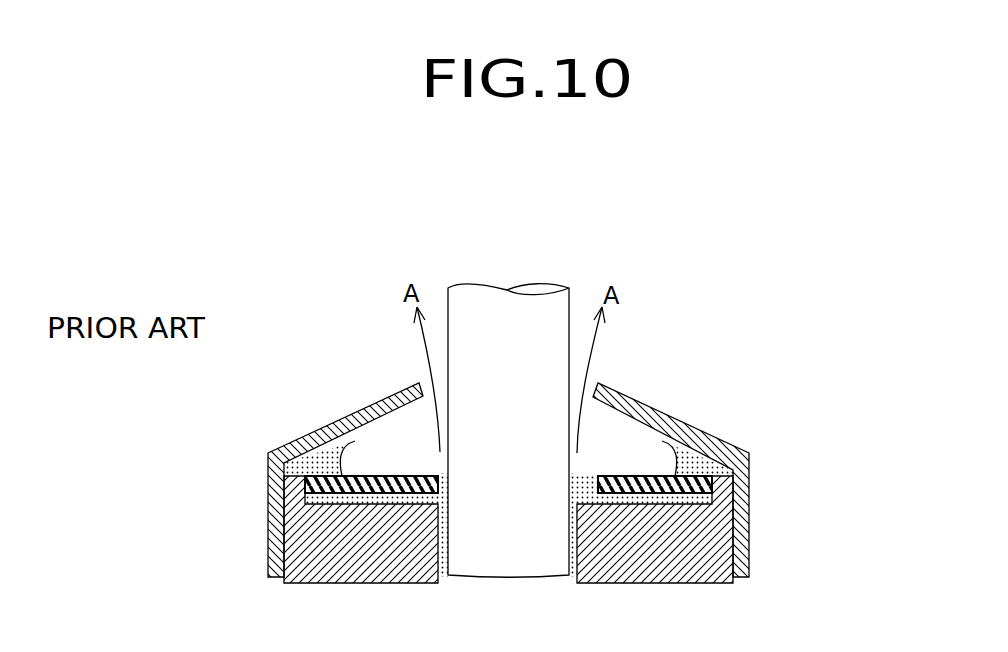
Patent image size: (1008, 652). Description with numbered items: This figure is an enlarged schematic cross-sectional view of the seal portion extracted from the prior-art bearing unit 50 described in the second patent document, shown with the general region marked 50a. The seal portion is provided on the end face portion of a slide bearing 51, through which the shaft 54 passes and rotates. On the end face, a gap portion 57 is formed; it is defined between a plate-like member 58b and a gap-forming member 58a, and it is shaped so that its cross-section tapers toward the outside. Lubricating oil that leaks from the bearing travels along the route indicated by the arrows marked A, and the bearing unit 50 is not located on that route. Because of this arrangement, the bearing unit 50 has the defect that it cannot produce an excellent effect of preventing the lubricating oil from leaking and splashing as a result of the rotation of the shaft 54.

The bearing unit 50 is at (348, 289).
The seal assembly 50a is at (660, 270).
The slide bearing 51 is at (712, 543).
The shaft 54 is at (507, 310).
The gap portion 57 is at (632, 442).
The gap-forming member 58a is at (750, 460).
The plate-like member 58b is at (698, 476).